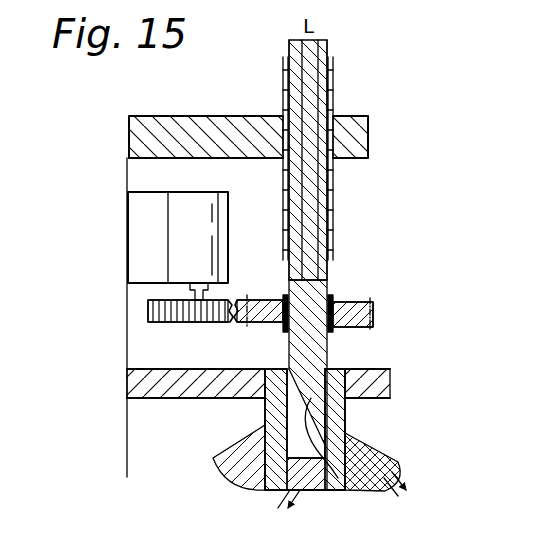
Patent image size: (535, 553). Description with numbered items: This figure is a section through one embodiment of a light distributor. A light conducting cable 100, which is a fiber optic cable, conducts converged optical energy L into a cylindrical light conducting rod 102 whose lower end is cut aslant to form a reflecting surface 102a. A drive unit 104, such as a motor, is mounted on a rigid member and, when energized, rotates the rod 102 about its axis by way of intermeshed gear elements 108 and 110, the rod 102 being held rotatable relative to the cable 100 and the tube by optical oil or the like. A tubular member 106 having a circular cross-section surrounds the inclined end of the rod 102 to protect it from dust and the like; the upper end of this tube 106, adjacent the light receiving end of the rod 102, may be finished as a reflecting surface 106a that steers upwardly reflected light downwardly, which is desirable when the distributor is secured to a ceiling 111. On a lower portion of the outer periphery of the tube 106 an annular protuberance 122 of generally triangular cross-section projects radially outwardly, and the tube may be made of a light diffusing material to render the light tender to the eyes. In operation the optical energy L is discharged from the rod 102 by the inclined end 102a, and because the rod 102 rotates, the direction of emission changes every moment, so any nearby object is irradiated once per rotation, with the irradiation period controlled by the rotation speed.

The light conducting cable 100 is at (330, 68).
The light conducting rod 102 is at (289, 284).
The reflecting surface 102a is at (338, 478).
The drive unit 104 is at (218, 237).
The tubular member 106 is at (266, 419).
The reflecting surface 106a is at (337, 369).
The gear element 108 is at (213, 323).
The gear element 110 is at (350, 333).
The ceiling 111 is at (224, 402).
The annular protuberance 122 is at (375, 444).